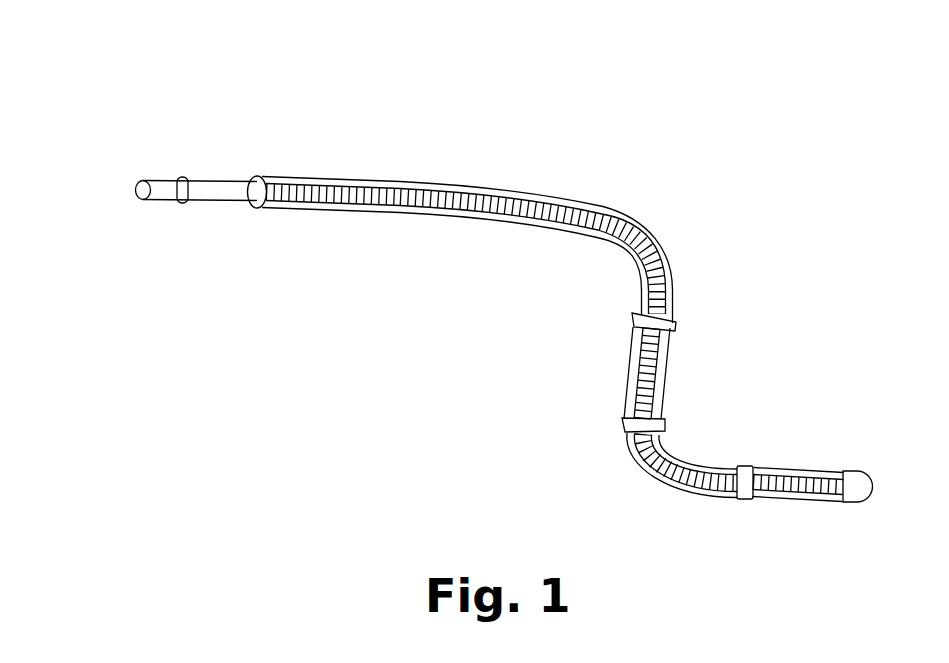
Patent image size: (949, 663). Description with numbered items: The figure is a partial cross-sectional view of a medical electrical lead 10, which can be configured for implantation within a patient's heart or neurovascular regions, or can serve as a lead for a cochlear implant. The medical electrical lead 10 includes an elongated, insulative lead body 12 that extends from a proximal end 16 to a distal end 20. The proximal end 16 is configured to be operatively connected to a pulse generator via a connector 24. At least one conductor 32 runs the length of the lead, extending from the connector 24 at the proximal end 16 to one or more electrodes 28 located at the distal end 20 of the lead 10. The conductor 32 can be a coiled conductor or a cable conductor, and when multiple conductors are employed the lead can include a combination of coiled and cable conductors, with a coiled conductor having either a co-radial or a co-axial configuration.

The medical electrical lead 10 is at (166, 80).
The lead body 12 is at (534, 195).
The proximal end 16 is at (340, 177).
The distal end 20 is at (821, 469).
The connector 24 is at (228, 181).
The electrodes 28 is at (862, 473).
The conductor 32 is at (593, 216).